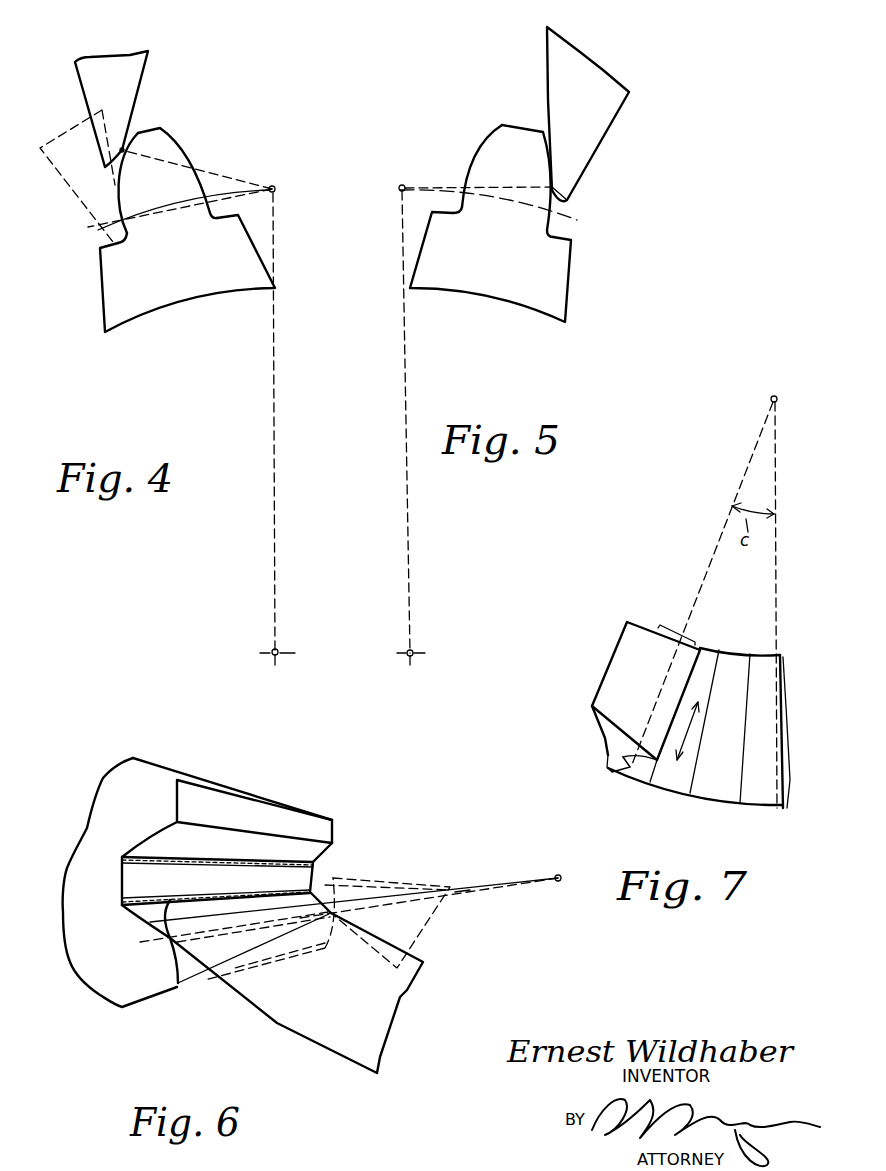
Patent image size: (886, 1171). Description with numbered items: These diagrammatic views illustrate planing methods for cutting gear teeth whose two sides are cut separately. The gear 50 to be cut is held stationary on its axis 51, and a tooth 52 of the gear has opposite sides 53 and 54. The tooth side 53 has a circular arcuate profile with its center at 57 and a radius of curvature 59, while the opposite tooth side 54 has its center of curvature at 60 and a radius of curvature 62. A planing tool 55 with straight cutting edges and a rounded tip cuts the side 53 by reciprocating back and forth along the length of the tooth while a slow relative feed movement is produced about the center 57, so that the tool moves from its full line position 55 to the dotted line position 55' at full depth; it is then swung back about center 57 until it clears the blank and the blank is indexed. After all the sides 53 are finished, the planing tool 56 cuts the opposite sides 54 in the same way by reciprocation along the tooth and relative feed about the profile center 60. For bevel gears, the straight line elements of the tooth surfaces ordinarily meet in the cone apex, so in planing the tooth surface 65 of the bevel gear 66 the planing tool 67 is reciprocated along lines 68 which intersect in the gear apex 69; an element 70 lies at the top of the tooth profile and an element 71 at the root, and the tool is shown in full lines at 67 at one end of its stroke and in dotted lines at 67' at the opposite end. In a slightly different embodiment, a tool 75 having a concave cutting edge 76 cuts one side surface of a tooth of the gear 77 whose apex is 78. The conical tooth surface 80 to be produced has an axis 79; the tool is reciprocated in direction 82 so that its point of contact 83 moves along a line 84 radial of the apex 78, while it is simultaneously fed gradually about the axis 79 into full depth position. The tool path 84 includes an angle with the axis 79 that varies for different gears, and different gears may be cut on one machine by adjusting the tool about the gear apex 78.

In FIG. 4, the gear 50 is at (180, 288).
In FIG. 5, the gear 50 is at (498, 283).
In FIG. 4, the axis 51 is at (273, 657).
In FIG. 5, the axis 51 is at (412, 648).
In FIG. 4, the tooth 52 is at (160, 142).
In FIG. 5, the tooth 52 is at (512, 140).
In FIG. 4, the tooth side 53 is at (117, 185).
In FIG. 5, the tooth side 53 is at (480, 150).
In FIG. 4, the tooth side 54 is at (187, 152).
In FIG. 5, the tooth side 54 is at (567, 202).
In FIG. 4, the planing tool 55 is at (125, 109).
In FIG. 4, the planing tool dotted-line position 55' is at (75, 176).
In FIG. 5, the planing tool 56 is at (603, 118).
In FIG. 4, the center of profile curvature 57 is at (275, 186).
In FIG. 4, the radius of curvature 59 is at (220, 173).
In FIG. 5, the center of curvature 60 is at (403, 186).
In FIG. 5, the radius of curvature 62 is at (505, 187).
In FIG. 6, the tooth surface 65 is at (145, 925).
In FIG. 6, the bevel gear 66 is at (75, 940).
In FIG. 6, the planing tool 67 is at (296, 993).
In FIG. 6, the planing tool dotted-line position 67' is at (295, 929).
In FIG. 6, the lines of reciprocation 68 is at (460, 890).
In FIG. 6, the gear apex 69 is at (559, 882).
In FIG. 6, the top tooth-surface element 70 is at (467, 897).
In FIG. 6, the root tooth-surface element 71 is at (485, 880).
In FIG. 7, the tool 75 is at (606, 724).
In FIG. 7, the concave cutting edge 76 is at (638, 765).
In FIG. 7, the gear 77 is at (725, 793).
In FIG. 7, the apex 78 is at (776, 397).
In FIG. 7, the axis of conical tooth surface 79 is at (778, 608).
In FIG. 7, the conical tooth surface 80 is at (632, 770).
In FIG. 7, the direction of reciprocation 82 is at (690, 732).
In FIG. 7, the point of contact 83 is at (627, 772).
In FIG. 7, the tool path 84 is at (709, 565).